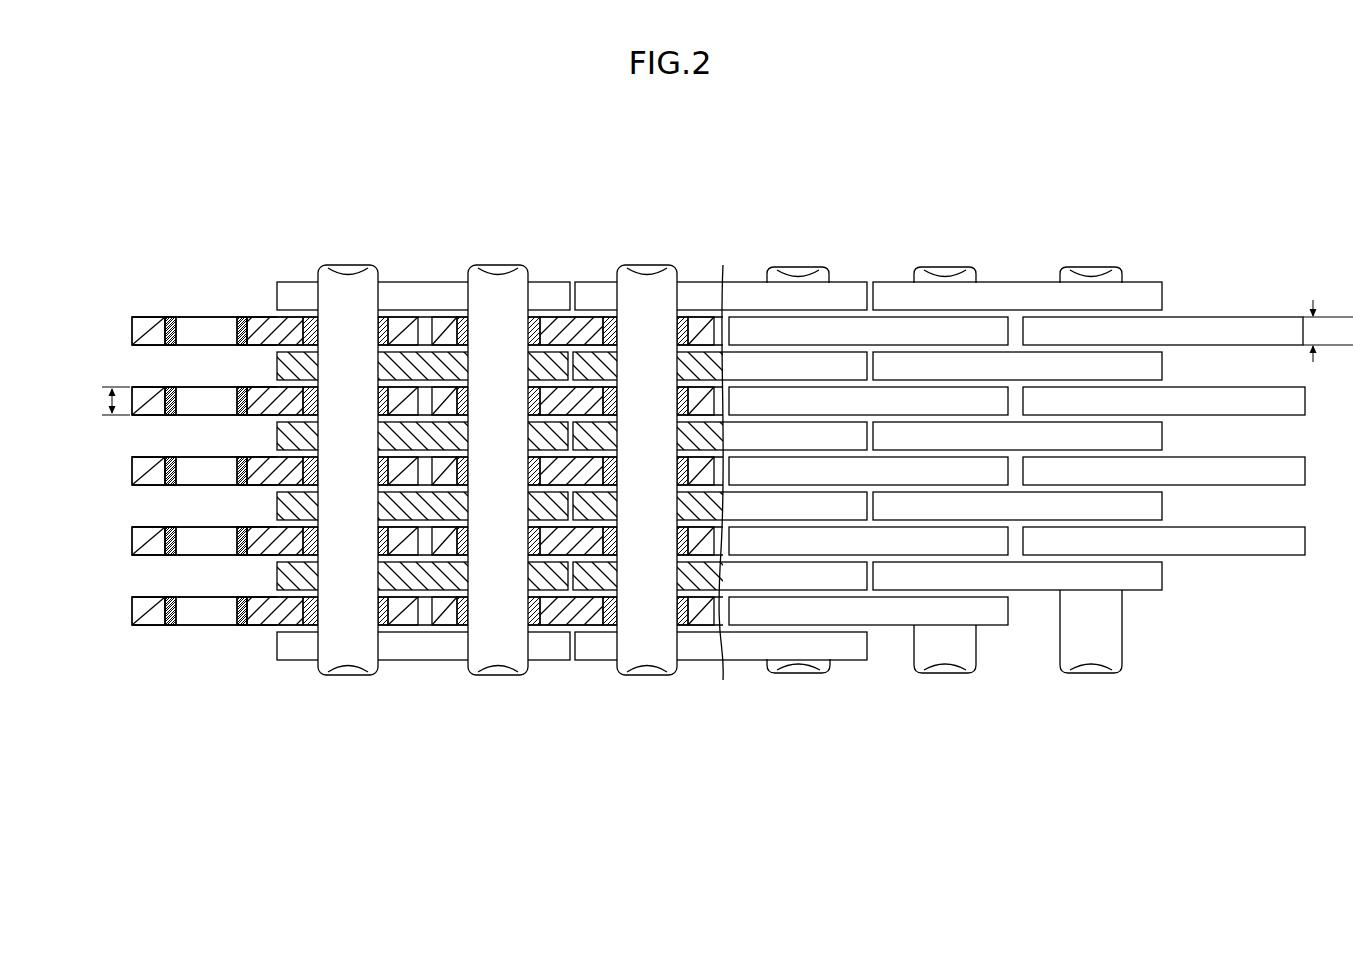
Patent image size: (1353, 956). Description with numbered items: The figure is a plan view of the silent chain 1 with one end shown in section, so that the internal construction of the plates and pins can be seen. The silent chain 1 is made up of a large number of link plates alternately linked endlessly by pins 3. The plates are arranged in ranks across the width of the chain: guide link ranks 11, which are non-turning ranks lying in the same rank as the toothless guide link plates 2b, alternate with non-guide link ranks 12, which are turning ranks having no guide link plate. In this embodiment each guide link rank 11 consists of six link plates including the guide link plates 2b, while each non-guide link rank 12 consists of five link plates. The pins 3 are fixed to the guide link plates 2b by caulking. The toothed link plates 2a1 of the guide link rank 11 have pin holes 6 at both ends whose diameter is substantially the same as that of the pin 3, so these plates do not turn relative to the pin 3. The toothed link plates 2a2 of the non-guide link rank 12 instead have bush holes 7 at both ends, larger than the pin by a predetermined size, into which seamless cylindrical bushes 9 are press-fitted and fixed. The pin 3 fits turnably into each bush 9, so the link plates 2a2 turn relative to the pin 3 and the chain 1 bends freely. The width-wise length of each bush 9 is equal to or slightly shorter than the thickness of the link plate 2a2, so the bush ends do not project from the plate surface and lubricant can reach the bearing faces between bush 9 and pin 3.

The silent chain 1 is at (412, 158).
The guide link rank 11 is at (438, 246).
The non-guide link rank 12 is at (209, 271).
The link plate of the guide link rank 2a1 is at (292, 366).
The link plate of the non-guide link rank 2a2 is at (132, 323).
The guide link plate 2b is at (410, 282).
The pin 3 is at (330, 264).
The pin hole 6 is at (374, 370).
The bush hole 7 is at (184, 317).
The bush 9 is at (239, 318).